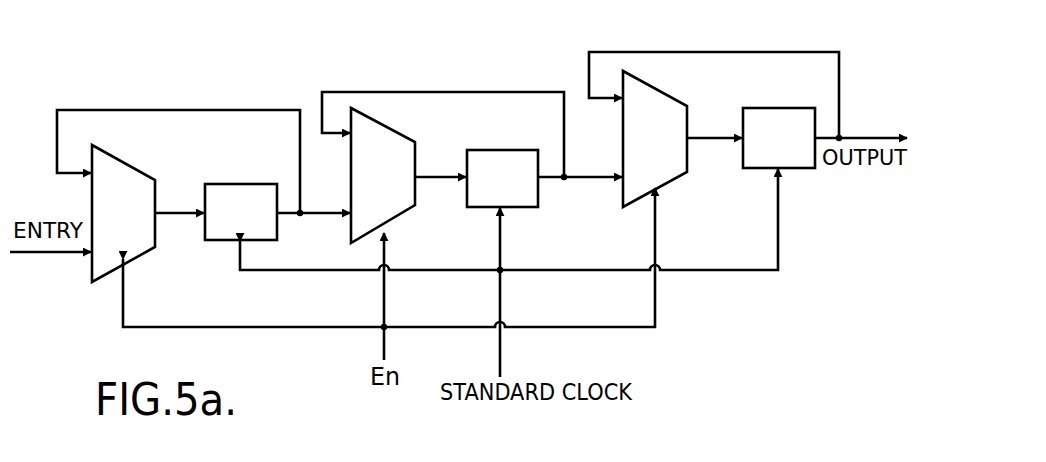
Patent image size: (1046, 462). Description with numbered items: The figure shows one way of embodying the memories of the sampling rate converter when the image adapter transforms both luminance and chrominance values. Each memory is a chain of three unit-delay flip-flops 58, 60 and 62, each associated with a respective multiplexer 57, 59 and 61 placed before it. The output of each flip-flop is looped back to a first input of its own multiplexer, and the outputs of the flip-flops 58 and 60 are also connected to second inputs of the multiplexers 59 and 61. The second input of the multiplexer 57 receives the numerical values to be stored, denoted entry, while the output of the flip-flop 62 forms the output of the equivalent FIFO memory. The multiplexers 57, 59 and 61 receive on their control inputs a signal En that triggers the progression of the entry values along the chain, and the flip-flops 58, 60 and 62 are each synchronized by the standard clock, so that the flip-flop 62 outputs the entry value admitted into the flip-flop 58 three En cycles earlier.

The multiplexer 57 is at (147, 250).
The flip-flop 58 is at (222, 242).
The multiplexer 59 is at (403, 215).
The flip-flop 60 is at (530, 208).
The multiplexer 61 is at (672, 180).
The flip-flop 62 is at (790, 170).